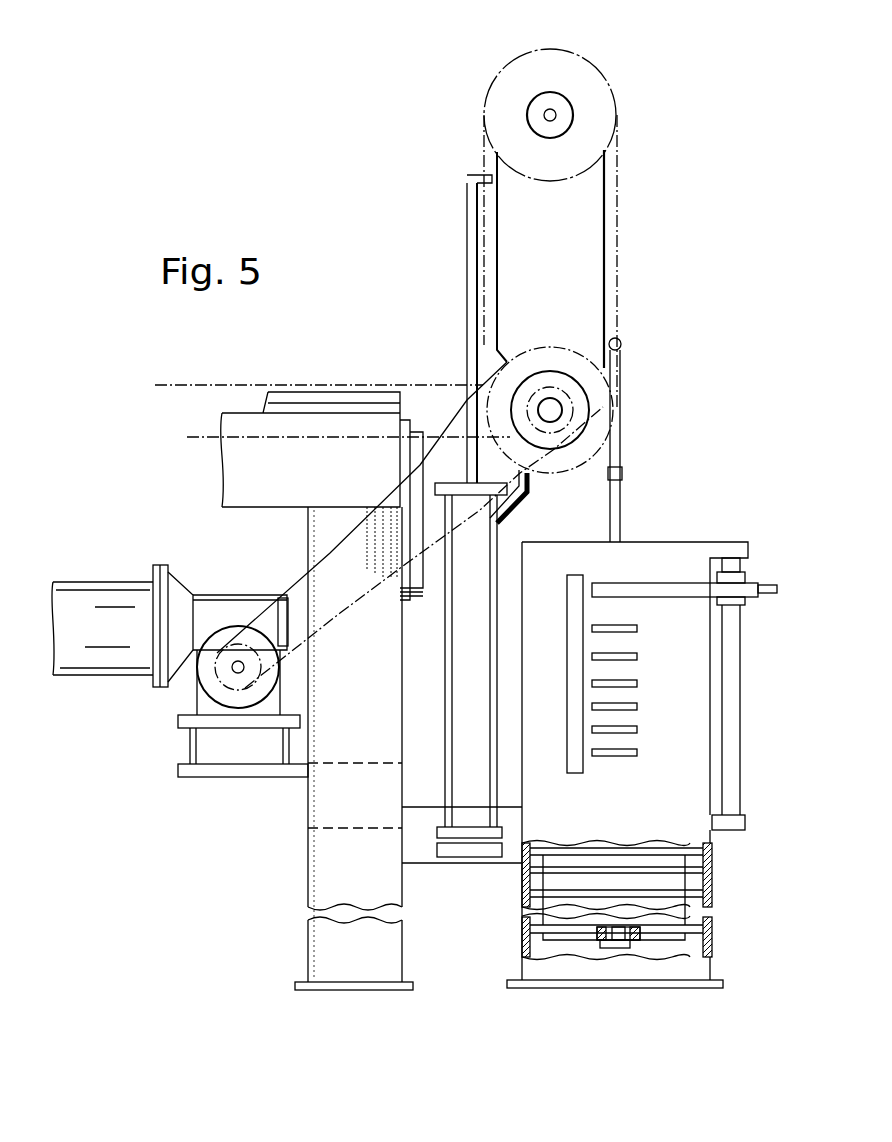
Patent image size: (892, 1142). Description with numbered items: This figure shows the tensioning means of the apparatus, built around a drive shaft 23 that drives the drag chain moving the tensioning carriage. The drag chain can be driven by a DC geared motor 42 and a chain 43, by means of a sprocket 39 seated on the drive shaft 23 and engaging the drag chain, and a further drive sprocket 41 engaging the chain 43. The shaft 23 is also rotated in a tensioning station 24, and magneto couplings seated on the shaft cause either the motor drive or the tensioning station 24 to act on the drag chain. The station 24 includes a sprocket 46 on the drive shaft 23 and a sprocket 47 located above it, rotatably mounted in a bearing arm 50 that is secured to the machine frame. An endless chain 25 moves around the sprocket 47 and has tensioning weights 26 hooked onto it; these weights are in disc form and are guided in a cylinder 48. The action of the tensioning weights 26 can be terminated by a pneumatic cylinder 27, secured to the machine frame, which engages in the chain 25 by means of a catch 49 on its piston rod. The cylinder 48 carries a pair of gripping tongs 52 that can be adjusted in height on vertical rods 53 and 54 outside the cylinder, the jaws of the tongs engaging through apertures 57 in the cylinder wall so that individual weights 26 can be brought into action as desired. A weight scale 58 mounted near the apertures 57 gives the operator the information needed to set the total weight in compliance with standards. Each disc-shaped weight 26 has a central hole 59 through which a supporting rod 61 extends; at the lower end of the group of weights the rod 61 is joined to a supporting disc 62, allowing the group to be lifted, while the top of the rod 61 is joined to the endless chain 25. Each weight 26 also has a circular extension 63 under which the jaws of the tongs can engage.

The shaft 23 is at (550, 402).
The tensioning station 24 is at (764, 481).
The endless chain 25 is at (616, 168).
The tensioning weights 26 is at (550, 920).
The pneumatic cylinder 27 is at (467, 817).
The sprocket 39 is at (603, 407).
The drive sprocket 41 is at (597, 430).
The DC geared motor 42 is at (122, 595).
The chain 43 is at (302, 580).
The sprocket 46 is at (573, 347).
The sprocket 47 is at (571, 53).
The cylinder 48 is at (713, 852).
The catch 49 is at (482, 175).
The bearing arm 50 is at (507, 210).
The gripping tongs 52 is at (668, 592).
The vertical rod 53 is at (472, 347).
The vertical rod 54 is at (733, 747).
The apertures 57 is at (638, 629).
The weight scale 58 is at (577, 768).
The central hole 59 is at (597, 940).
The supporting rod 61 is at (615, 500).
The supporting disc 62 is at (637, 940).
The circular extension 63 is at (700, 870).